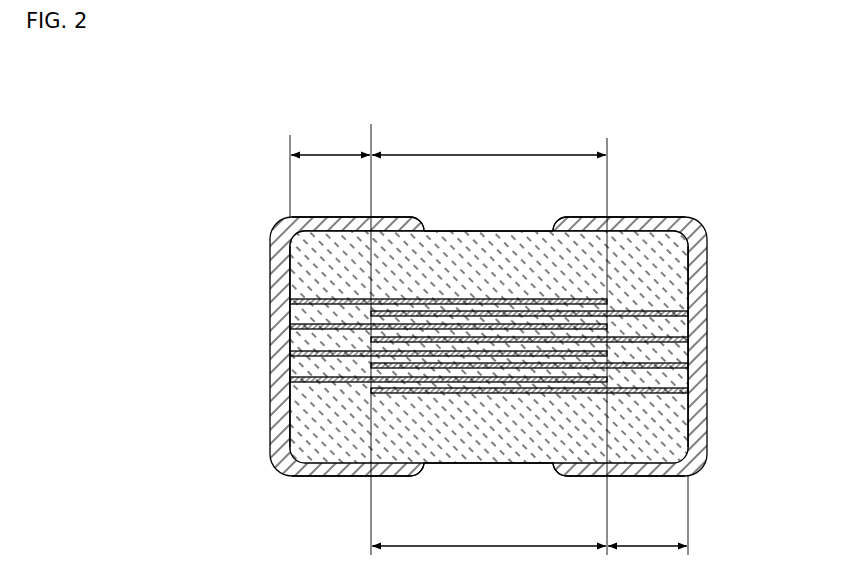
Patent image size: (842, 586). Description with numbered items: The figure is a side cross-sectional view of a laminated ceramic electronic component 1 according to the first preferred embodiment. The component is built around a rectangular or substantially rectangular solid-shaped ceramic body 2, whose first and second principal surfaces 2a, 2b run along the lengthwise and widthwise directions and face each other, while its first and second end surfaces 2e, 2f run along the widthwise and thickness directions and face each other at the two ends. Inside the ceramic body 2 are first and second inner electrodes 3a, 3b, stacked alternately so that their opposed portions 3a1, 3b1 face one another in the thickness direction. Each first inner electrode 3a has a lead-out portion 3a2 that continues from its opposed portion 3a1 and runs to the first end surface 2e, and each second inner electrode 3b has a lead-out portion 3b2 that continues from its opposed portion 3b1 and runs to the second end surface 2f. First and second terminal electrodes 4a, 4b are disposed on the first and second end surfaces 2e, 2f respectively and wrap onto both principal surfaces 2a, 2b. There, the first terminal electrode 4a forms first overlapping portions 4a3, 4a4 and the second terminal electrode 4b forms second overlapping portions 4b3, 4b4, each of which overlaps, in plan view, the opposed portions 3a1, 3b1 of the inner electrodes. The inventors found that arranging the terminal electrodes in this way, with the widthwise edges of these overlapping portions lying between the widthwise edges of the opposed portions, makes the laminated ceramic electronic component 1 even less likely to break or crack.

The laminated ceramic electronic component 1 is at (246, 176).
The ceramic body 2 is at (522, 228).
The first principal surface 2a is at (453, 230).
The second principal surface 2b is at (466, 465).
The first end surface 2e is at (290, 430).
The second end surface 2f is at (690, 430).
The first inner electrode 3a is at (292, 326).
The second inner electrode 3b is at (690, 331).
The opposed portion of first inner electrode 3a1 is at (489, 142).
The lead-out portion of first inner electrode 3a2 is at (330, 141).
The opposed portion of second inner electrode 3b1 is at (489, 559).
The lead-out portion of second inner electrode 3b2 is at (647, 559).
The first terminal electrode 4a is at (268, 380).
The second terminal electrode 4b is at (710, 380).
The first overlapping portion of first terminal electrode 4a3 is at (393, 216).
The first overlapping portion of first terminal electrode 4a4 is at (400, 478).
The second overlapping portion of second terminal electrode 4b3 is at (580, 216).
The second overlapping portion of second terminal electrode 4b4 is at (578, 478).